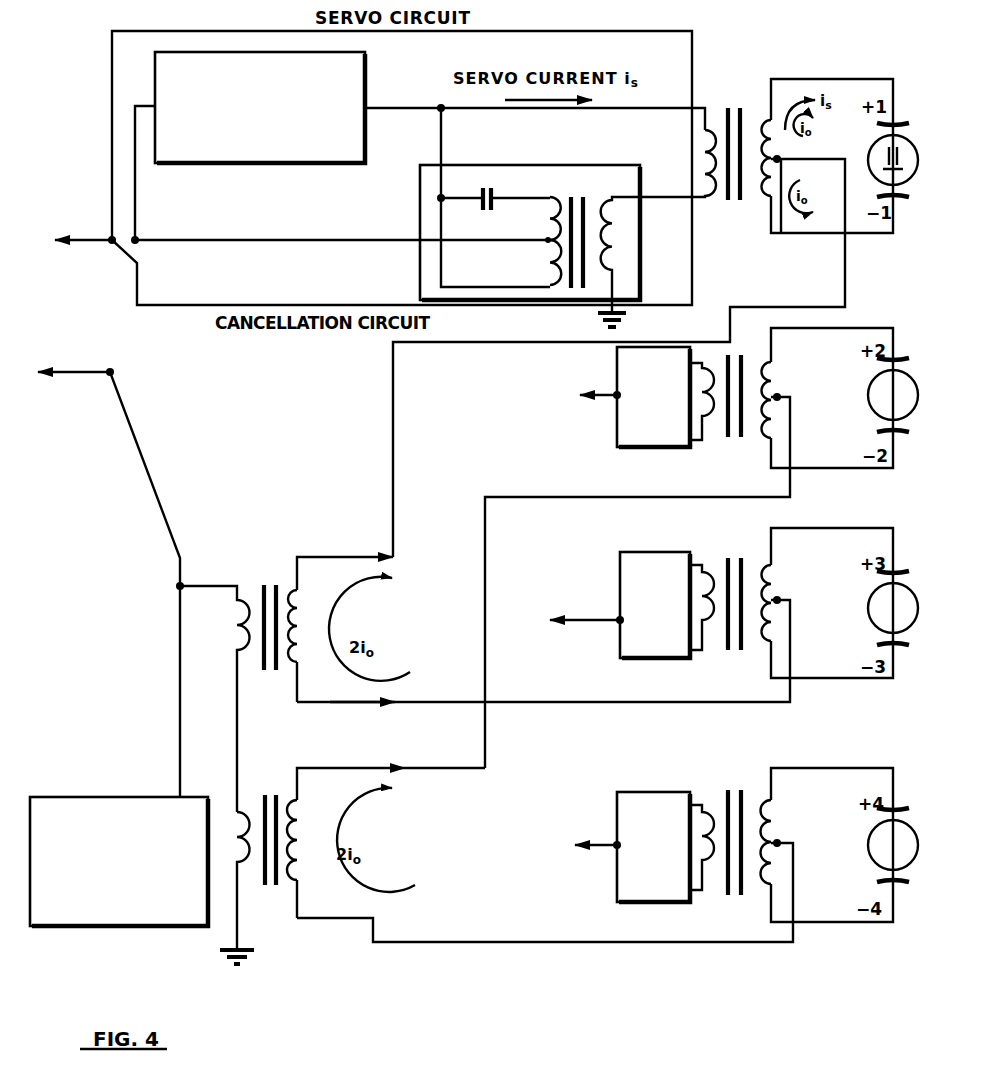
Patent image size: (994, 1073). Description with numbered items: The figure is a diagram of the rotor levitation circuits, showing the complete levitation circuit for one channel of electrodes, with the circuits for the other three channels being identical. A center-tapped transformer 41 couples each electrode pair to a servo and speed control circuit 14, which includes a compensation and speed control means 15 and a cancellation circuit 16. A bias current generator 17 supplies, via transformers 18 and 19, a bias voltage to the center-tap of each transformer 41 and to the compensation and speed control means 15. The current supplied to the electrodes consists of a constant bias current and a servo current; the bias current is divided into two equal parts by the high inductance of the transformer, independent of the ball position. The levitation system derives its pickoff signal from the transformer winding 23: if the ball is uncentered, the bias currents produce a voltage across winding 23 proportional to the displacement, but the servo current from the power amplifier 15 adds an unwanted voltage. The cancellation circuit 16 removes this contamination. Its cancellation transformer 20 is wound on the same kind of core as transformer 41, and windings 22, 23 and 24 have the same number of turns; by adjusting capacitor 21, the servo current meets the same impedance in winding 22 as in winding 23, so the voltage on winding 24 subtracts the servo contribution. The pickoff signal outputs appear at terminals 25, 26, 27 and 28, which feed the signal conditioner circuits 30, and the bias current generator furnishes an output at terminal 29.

The servo and speed control circuit 14 is at (580, 31).
The compensation and speed control means 15 is at (323, 100).
The cancellation circuit 16 is at (565, 289).
The bias current generator 17 is at (128, 894).
The transformer 18 is at (262, 668).
The transformer 19 is at (264, 795).
The cancellation transformer 20 is at (585, 289).
The capacitor 21 is at (493, 203).
The winding 22 is at (640, 249).
The transformer winding 23 is at (713, 178).
The winding 24 is at (541, 241).
The terminal 25 is at (112, 238).
The terminal 26 is at (653, 397).
The terminal 27 is at (655, 605).
The terminal 28 is at (653, 847).
The terminal 29 is at (113, 374).
The circuit 30 is at (314, 550).
The center-tapped transformer 41 is at (740, 104).